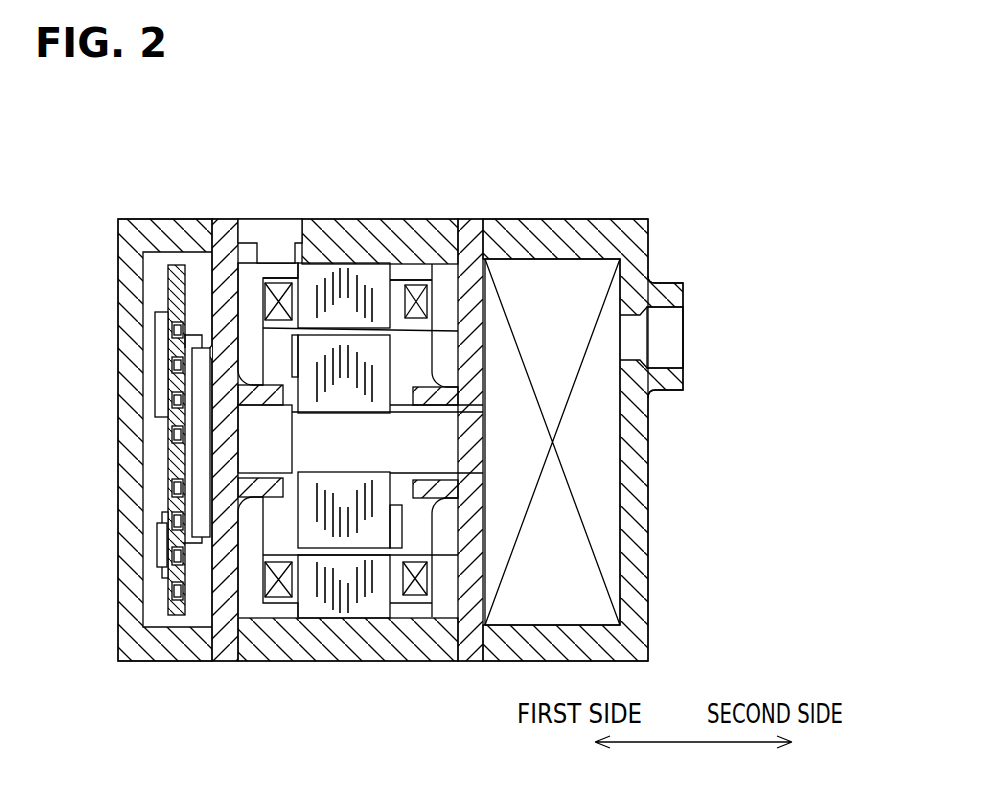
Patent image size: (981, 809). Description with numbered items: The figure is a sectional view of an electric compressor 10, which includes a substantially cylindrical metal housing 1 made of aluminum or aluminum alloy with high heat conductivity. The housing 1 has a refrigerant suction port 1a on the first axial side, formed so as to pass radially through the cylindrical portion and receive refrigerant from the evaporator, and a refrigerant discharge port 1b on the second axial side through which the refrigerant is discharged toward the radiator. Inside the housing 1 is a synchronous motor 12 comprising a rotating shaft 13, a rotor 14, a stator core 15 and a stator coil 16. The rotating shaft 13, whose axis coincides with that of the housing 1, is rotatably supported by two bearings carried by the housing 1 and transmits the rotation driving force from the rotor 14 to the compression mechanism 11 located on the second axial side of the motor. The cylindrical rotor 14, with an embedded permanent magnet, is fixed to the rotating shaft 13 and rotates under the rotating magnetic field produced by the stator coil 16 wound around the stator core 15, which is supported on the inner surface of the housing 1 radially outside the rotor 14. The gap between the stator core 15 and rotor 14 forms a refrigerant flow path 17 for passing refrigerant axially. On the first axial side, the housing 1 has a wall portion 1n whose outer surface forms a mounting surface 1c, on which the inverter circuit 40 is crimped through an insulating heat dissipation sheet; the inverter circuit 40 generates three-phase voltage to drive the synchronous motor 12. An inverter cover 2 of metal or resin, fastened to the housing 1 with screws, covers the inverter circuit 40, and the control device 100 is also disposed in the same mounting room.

The housing 1 is at (443, 240).
The refrigerant suction port 1a is at (270, 218).
The refrigerant discharge port 1b is at (683, 337).
The mounting surface 1c is at (207, 347).
The wall portion 1n is at (223, 547).
The inverter cover 2 is at (128, 436).
The electric compressor 10 is at (649, 189).
The compression mechanism 11 is at (600, 428).
The synchronous motor 12 is at (347, 430).
The rotating shaft 13 is at (467, 460).
The rotor 14 is at (378, 537).
The stator core 15 is at (345, 603).
The stator coil 16 is at (278, 592).
The refrigerant flow path 17 is at (323, 550).
The inverter circuit 40 is at (205, 528).
The control device 100 is at (155, 353).